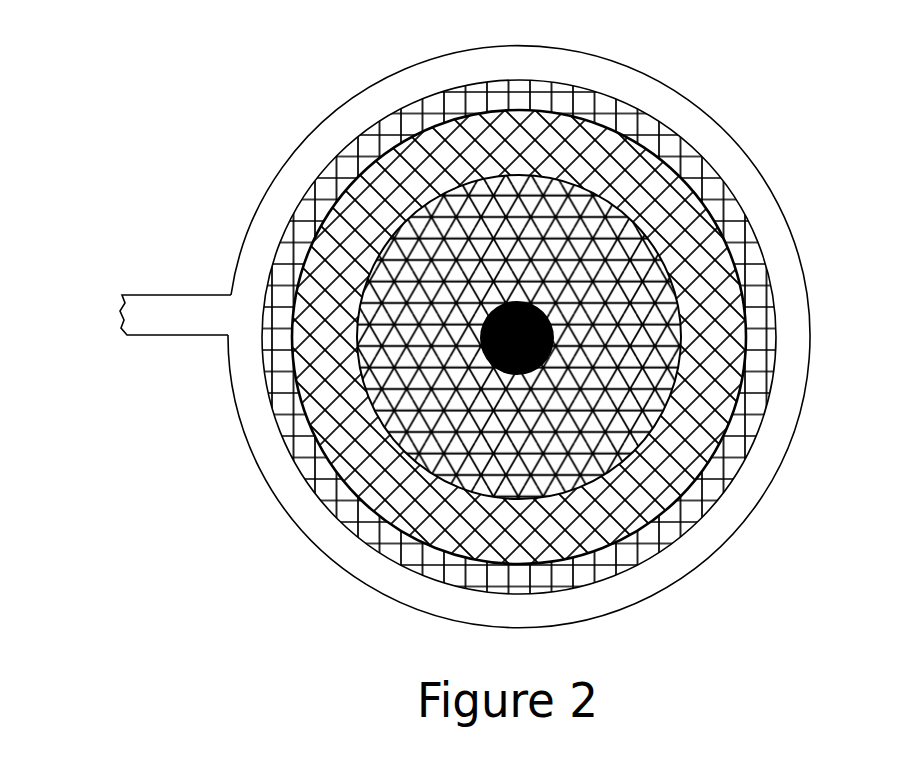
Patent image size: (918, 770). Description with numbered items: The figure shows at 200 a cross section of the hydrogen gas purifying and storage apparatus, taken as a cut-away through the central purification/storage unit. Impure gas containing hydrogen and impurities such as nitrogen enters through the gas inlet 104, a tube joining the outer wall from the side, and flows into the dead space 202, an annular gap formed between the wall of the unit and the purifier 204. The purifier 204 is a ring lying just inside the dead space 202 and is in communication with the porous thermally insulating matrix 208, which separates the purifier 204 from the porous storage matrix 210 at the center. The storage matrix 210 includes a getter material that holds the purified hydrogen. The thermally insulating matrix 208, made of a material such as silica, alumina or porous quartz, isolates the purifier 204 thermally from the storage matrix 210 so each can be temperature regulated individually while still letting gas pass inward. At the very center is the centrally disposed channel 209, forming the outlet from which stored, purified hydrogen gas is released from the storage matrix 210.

The cross section of the apparatus 200 is at (435, 325).
The dead space 202 is at (305, 525).
The purifier 204 is at (377, 122).
The porous thermally insulating matrix 208 is at (338, 175).
The centrally disposed channel 209 is at (547, 303).
The porous storage matrix 210 is at (453, 182).
The gas inlet 104 is at (157, 337).